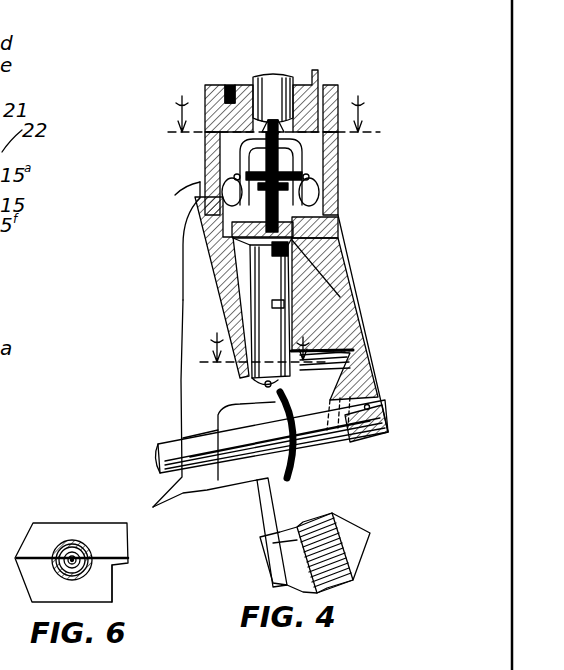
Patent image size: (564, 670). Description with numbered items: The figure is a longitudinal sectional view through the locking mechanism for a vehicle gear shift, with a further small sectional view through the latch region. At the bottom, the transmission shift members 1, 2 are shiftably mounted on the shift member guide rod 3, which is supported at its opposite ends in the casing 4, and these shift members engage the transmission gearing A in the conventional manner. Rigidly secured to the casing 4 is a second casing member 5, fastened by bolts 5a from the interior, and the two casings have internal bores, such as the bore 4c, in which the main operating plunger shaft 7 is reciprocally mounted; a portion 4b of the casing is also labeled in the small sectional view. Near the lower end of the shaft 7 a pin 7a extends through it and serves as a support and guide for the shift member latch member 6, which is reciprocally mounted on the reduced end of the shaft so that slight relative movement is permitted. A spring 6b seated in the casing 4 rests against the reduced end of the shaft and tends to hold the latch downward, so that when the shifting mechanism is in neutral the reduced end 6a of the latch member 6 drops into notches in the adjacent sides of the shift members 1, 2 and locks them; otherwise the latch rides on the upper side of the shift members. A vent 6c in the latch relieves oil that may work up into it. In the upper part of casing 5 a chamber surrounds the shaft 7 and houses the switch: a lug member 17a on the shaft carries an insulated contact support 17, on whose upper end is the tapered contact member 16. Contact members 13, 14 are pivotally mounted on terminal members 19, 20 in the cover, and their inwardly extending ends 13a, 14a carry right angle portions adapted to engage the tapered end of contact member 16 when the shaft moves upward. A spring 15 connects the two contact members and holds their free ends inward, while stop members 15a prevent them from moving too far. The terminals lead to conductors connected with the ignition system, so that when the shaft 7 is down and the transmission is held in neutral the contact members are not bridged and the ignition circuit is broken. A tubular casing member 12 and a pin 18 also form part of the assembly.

In FIG. 4, the shift member 1 is at (260, 513).
In FIG. 6, the shift member 1 is at (38, 528).
In FIG. 4, the shift member 2 is at (195, 485).
In FIG. 4, the shift member guide rod 3 is at (365, 435).
In FIG. 4, the casing 4 is at (182, 318).
In FIG. 6, the housing arm 4b is at (112, 592).
In FIG. 4, the internal bore 4c is at (296, 327).
In FIG. 4, the casing member 5 is at (342, 275).
In FIG. 4, the bolts 5a is at (205, 130).
In FIG. 4, the shift member latch member 6 is at (268, 282).
In FIG. 6, the shift member latch member 6 is at (70, 540).
In FIG. 4, the reduced end of the latch 6a is at (292, 392).
In FIG. 6, the reduced end of the latch 6a is at (58, 565).
In FIG. 6, the spring 6b is at (93, 560).
In FIG. 4, the vent 6c is at (272, 384).
In FIG. 6, the vent 6c is at (83, 548).
In FIG. 4, the main operating plunger shaft 7 is at (263, 77).
In FIG. 4, the pin 7a is at (296, 298).
In FIG. 4, the tubular casing member 12 is at (229, 85).
In FIG. 4, the electrical switch contact member 13 is at (234, 182).
In FIG. 4, the inwardly extending end 13a is at (266, 83).
In FIG. 4, the electrical switch contact member 14 is at (300, 160).
In FIG. 4, the inwardly extending end 14a is at (281, 135).
In FIG. 4, the spring 15 is at (320, 192).
In FIG. 4, the stop members 15a is at (350, 150).
In FIG. 4, the tapered contact member 16 is at (292, 148).
In FIG. 4, the insulated contact support 17 is at (328, 256).
In FIG. 4, the lug member 17a is at (240, 242).
In FIG. 4, the pin 18 is at (300, 226).
In FIG. 4, the terminal member 19 is at (172, 196).
In FIG. 4, the terminal member 20 is at (335, 212).
In FIG. 4, the transmission gearing A is at (340, 540).